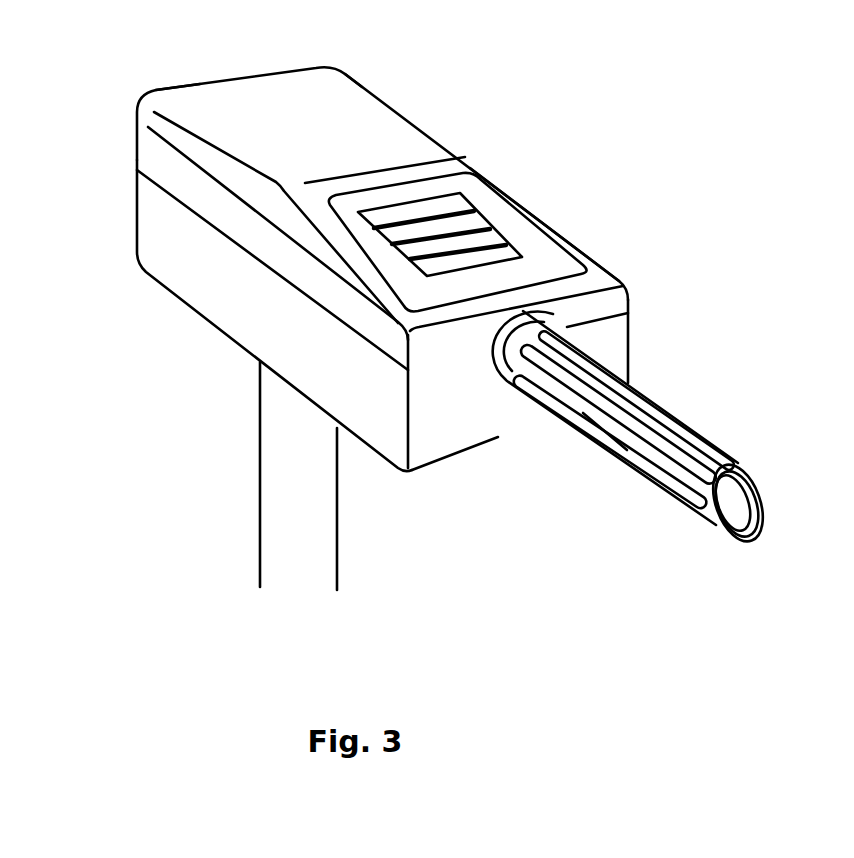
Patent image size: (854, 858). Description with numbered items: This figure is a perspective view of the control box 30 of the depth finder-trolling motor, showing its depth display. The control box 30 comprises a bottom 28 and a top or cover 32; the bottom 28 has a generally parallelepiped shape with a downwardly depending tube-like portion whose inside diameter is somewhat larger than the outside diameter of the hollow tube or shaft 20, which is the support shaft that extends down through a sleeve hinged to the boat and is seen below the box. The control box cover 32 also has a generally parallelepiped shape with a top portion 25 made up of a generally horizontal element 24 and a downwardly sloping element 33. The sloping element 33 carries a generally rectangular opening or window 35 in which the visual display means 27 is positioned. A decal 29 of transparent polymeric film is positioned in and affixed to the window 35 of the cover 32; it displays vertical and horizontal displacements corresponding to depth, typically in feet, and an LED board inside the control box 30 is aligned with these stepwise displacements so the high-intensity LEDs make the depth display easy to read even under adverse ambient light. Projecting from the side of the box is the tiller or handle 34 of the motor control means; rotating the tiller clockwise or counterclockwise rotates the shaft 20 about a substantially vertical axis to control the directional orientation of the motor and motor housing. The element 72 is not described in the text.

The hollow tube or shaft 20 is at (273, 487).
The generally horizontal element 24 is at (389, 104).
The top portion 25 is at (217, 98).
The visual display means 27 is at (503, 208).
The bottom 28 is at (153, 237).
The decal 29 is at (460, 193).
The control box 30 is at (136, 125).
The top or cover 32 is at (153, 167).
The downwardly sloping element 33 is at (541, 219).
The tiller or handle 34 is at (613, 447).
The rectangular opening or window 35 is at (563, 249).
The bottom edge 72 is at (470, 437).